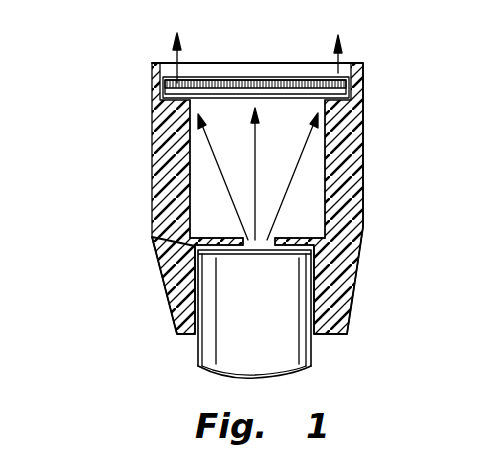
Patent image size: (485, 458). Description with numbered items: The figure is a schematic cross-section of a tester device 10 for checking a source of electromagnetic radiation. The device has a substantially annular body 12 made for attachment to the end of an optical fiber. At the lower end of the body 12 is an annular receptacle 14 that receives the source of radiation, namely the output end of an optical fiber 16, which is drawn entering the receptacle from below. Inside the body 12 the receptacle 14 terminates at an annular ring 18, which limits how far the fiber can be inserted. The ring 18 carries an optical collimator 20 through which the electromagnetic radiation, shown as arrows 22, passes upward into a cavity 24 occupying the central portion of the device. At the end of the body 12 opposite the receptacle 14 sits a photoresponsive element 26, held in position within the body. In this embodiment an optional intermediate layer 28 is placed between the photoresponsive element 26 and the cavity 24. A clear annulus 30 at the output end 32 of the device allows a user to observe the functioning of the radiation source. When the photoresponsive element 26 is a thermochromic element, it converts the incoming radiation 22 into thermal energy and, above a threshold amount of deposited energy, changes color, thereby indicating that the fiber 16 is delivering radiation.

The tester device 10 is at (116, 113).
The body 12 is at (356, 118).
The annular receptacle 14 is at (302, 280).
The optical fiber 16 is at (208, 348).
The annular ring 18 is at (282, 238).
The optical collimator 20 is at (270, 238).
The electromagnetic radiation 22 is at (210, 150).
The cavity 24 is at (198, 202).
The photoresponsive element 26 is at (216, 82).
The intermediate layer 28 is at (270, 93).
The clear annulus 30 is at (170, 64).
The output end 32 is at (202, 51).